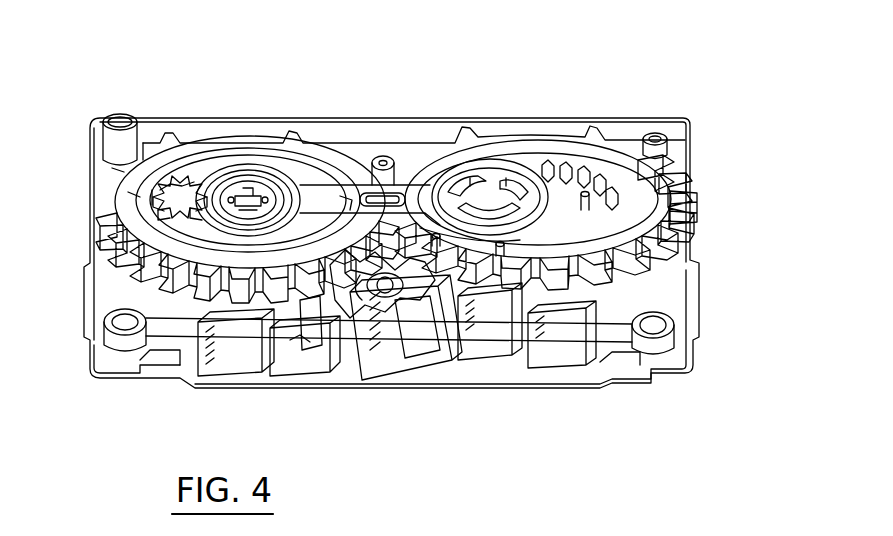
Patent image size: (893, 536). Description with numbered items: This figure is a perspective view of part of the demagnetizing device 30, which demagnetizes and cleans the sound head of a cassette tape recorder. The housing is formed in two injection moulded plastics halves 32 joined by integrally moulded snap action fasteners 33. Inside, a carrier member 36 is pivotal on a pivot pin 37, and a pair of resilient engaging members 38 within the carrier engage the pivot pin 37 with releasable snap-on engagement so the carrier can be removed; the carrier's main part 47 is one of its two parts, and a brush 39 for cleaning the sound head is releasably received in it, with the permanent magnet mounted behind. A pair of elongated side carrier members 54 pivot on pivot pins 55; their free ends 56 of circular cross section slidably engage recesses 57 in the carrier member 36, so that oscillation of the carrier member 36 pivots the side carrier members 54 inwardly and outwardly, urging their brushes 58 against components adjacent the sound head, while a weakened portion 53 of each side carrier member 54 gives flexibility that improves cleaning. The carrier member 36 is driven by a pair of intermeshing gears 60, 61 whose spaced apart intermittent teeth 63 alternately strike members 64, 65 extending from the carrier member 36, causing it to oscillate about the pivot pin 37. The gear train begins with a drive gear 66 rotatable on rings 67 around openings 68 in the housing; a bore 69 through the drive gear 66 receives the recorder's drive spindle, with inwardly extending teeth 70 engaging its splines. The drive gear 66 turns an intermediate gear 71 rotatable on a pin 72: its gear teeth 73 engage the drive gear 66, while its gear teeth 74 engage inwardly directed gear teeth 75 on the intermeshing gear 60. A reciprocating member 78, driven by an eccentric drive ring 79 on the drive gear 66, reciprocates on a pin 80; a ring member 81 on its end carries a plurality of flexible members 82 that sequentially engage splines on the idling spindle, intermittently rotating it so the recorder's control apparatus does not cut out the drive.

The demagnetizing device 30 is at (622, 95).
The housing halves 32 is at (673, 170).
The snap action fasteners 33 is at (120, 118).
The carrier member 36 is at (450, 352).
The pivot pin 37 is at (370, 330).
The resilient engaging members 38 is at (390, 343).
The brush 39 is at (427, 373).
The main part 47 is at (317, 345).
The weakened portion 53 is at (137, 363).
The side carrier members 54 is at (162, 338).
The pivot pins 55 is at (120, 322).
The free ends 56 is at (353, 330).
The recesses 57 is at (336, 340).
The brushes 58 is at (213, 372).
The intermeshing gear 60 is at (212, 143).
The intermeshing gear 61 is at (535, 158).
The intermittent teeth 63 is at (303, 135).
The member 64 is at (297, 347).
The member 65 is at (458, 160).
The drive gear 66 is at (352, 192).
The rings 67 is at (280, 182).
The openings 68 is at (258, 166).
The bore 69 is at (252, 176).
The teeth 70 is at (210, 195).
The intermediate gear 71 is at (155, 190).
The pin 72 is at (195, 185).
The gear teeth 73 is at (162, 184).
The gear teeth 74 is at (117, 172).
The inwardly directed gear teeth 75 is at (132, 195).
The reciprocating member 78 is at (386, 158).
The eccentric drive ring 79 is at (335, 186).
The pin 80 is at (434, 172).
The ring member 81 is at (575, 158).
The flexible members 82 is at (510, 175).